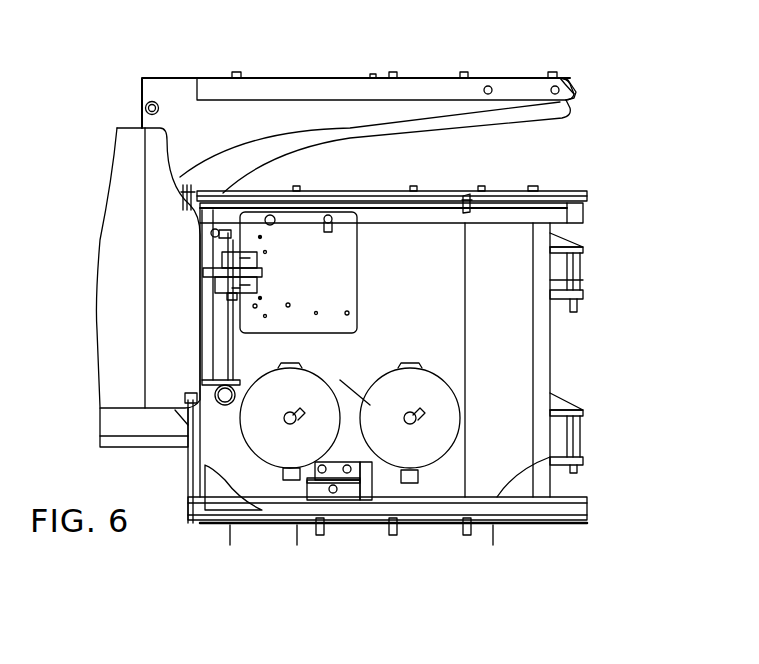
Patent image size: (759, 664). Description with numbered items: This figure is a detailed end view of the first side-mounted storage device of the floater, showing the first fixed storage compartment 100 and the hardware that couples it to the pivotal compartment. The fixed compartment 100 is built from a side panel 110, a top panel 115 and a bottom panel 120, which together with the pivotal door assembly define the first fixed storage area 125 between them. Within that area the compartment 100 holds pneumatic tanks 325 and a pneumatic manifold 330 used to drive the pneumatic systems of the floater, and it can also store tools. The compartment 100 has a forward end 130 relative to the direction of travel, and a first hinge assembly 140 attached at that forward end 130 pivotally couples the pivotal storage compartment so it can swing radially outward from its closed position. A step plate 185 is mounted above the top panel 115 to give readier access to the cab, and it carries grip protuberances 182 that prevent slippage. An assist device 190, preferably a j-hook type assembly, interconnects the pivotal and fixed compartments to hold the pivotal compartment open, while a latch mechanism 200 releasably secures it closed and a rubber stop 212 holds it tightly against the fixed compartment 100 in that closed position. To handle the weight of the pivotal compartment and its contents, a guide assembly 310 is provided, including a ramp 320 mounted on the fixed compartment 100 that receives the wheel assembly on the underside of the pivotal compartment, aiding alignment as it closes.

The first fixed storage compartment 100 is at (690, 200).
The side panel 110 is at (437, 283).
The top panel 115 is at (558, 190).
The bottom panel 120 is at (500, 495).
The first fixed storage area 125 is at (583, 293).
The forward end 130 is at (575, 218).
The first hinge assembly 140 is at (586, 256).
The grip protuberances 182 is at (295, 72).
The step plate 185 is at (517, 75).
The assist device 190 is at (458, 192).
The latch mechanism 200 is at (210, 290).
The rubber stop 212 is at (222, 400).
The guide assembly 310 is at (340, 502).
The ramp 320 is at (325, 492).
The pneumatic tanks 325 is at (322, 405).
The pneumatic manifold 330 is at (342, 282).